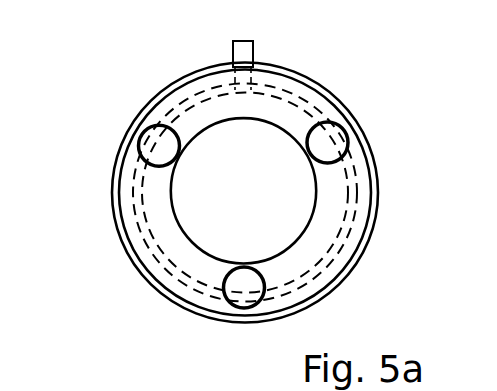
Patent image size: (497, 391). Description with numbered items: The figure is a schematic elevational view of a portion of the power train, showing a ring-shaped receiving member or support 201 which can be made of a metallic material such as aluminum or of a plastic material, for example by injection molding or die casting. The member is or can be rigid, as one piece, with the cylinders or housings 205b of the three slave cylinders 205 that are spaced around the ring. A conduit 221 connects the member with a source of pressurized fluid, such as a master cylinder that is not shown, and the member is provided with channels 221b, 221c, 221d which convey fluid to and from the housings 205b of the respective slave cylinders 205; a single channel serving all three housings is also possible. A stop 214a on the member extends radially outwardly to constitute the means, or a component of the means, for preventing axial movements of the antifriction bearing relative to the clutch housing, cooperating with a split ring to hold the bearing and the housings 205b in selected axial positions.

The lens holder assembly 201 is at (243, 187).
The slave cylinder 205 is at (347, 126).
The cylinder or housing 205b is at (136, 151).
The stop 214a is at (118, 218).
The conduit 221 is at (243, 52).
The channel 221b is at (190, 102).
The channel 221c is at (170, 268).
The channel 221d is at (350, 248).